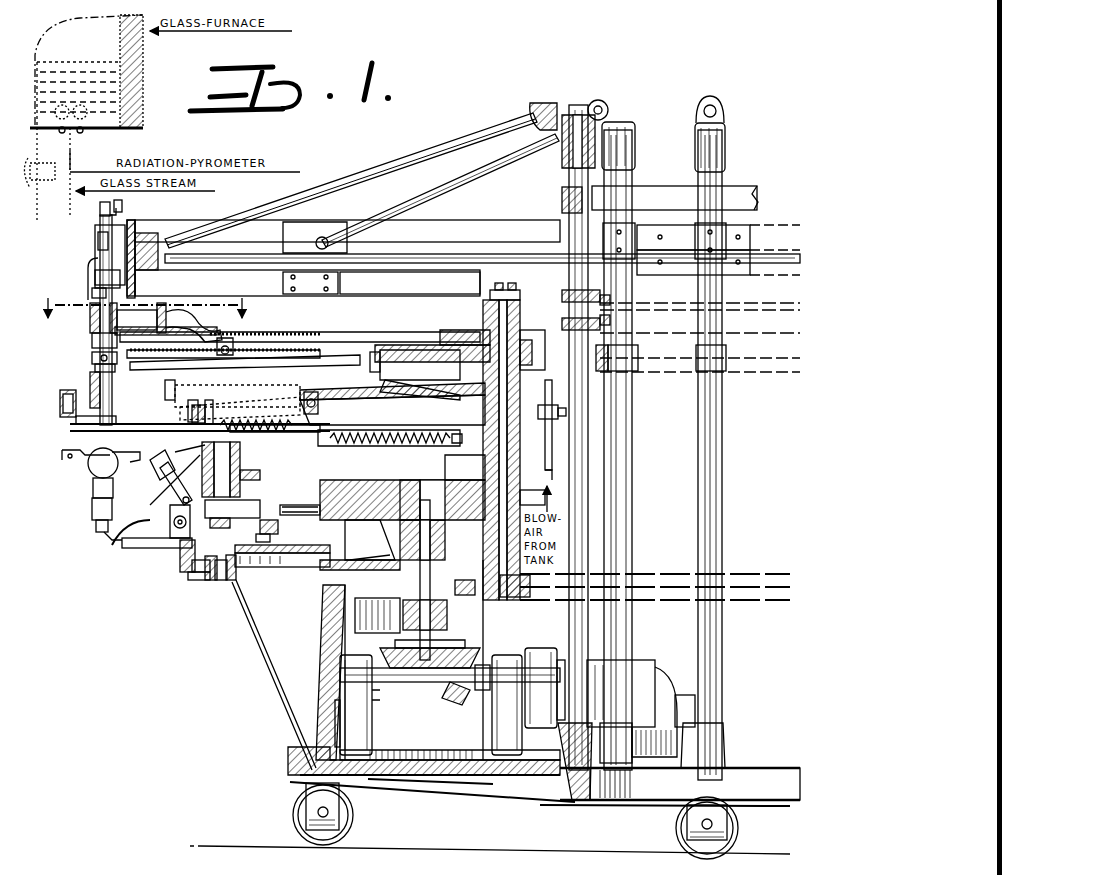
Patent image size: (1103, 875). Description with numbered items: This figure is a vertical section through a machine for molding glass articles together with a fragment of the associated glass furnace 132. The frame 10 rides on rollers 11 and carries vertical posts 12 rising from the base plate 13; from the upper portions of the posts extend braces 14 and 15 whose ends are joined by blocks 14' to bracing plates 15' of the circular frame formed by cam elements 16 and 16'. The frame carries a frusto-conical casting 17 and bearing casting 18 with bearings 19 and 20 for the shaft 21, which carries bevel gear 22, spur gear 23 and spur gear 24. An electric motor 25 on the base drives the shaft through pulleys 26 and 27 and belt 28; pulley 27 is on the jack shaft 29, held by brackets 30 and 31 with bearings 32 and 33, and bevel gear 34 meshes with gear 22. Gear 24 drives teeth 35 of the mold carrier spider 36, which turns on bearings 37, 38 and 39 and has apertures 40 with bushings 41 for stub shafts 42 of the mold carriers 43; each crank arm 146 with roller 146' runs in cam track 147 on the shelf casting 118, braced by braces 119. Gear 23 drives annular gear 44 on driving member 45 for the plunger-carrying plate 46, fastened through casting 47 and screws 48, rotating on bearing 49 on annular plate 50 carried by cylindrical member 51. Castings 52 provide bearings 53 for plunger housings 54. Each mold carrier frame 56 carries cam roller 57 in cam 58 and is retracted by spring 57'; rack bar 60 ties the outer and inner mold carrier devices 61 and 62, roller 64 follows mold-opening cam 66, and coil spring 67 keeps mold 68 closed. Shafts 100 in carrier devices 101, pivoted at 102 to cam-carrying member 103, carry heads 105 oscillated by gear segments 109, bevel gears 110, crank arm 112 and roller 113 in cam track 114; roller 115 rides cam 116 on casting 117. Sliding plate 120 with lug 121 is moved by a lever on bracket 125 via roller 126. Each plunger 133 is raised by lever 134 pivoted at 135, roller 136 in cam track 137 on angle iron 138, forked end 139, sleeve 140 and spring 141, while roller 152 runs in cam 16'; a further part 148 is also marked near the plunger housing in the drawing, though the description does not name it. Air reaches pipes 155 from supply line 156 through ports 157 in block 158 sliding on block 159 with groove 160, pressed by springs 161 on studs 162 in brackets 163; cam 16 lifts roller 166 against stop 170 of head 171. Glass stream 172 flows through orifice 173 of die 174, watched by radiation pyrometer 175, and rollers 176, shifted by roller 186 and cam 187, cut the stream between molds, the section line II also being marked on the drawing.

The frame 10 is at (286, 778).
The rollers 11 is at (352, 818).
The vertical standards or posts 12 is at (705, 520).
The base plate 13 is at (446, 790).
The braces 14 is at (332, 204).
The blocks 14' is at (467, 204).
The braces 15 is at (482, 243).
The bracing plates 15' is at (467, 249).
The cam element 16 is at (446, 214).
The channel-shaped cam member 16' is at (410, 283).
The casting 17 is at (318, 688).
The bearing casting 18 is at (340, 620).
The bearing 19 is at (409, 551).
The bearing 20 is at (400, 606).
The shaft 21 is at (447, 612).
The bevel gear 22 is at (462, 642).
The spur gear 23 is at (380, 560).
The spur gear 24 is at (408, 500).
The electric motor 25 is at (645, 660).
The pulley 26 is at (518, 730).
The pulley 27 is at (550, 650).
The connecting belt 28 is at (535, 648).
The jack shaft 29 is at (415, 684).
The bracket 30 is at (505, 655).
The bracket 31 is at (358, 660).
The bearing 32 is at (486, 692).
The bearing 33 is at (362, 690).
The bevel gear 34 is at (458, 704).
The teeth 35 is at (452, 490).
The mold carrier spider 36 is at (402, 486).
The bearing 37 is at (545, 440).
The bearing 38 is at (528, 494).
The bearing 39 is at (318, 522).
The apertures 40 is at (380, 440).
The bushings or bearing members 41 is at (385, 460).
The stub shafts 42 is at (212, 490).
The mold carriers 43 is at (248, 425).
The annular gear 44 is at (463, 595).
The hollow cylindrical driving member 45 is at (520, 597).
The plunger-carrying plate 46 is at (457, 326).
The connecting and bearing-carrying casting 47 is at (514, 283).
The screws 48 is at (500, 283).
The bearing 49 is at (392, 409).
The annular plate 50 is at (392, 398).
The generally cylindrical member 51 is at (560, 497).
The castings 52 is at (163, 277).
The bearings 53 is at (90, 320).
The plunger housing 54 is at (100, 340).
The mold carrier frame 56 is at (70, 431).
The cam roller 57 is at (389, 429).
The spring 57' is at (396, 428).
The cam 58 is at (312, 395).
The rack bar 60 is at (198, 405).
The outer mold carrier device 61 is at (82, 458).
The inner mold carrier device 62 is at (116, 465).
The roller 64 is at (210, 400).
The mold-opening cam 66 is at (245, 398).
The coil spring 67 is at (262, 425).
The mold 68 is at (92, 470).
The shaft 100 is at (106, 522).
The carrier devices 101 is at (138, 538).
The pivot 102 is at (175, 548).
The cam-carrying member 103 is at (165, 485).
The head 105 is at (93, 498).
The bevel gear segments 109 is at (110, 532).
The bevel gears 110 is at (116, 542).
The crank arm 112 is at (218, 582).
The roller 113 is at (228, 580).
The cam track 114 is at (240, 553).
The roller 115 is at (192, 566).
The cam 116 is at (195, 578).
The casting 117 is at (208, 580).
The shelf casting 118 is at (255, 567).
The braces 119 is at (270, 680).
The horizontally sliding plate 120 is at (156, 465).
The lug 121 is at (190, 450).
The bracket 125 is at (168, 470).
The roller 126 is at (185, 572).
The glass furnace 132 is at (142, 90).
The plunger 133 is at (93, 292).
The lever 134 is at (290, 342).
The pivot 135 is at (224, 338).
The roller 136 is at (390, 345).
The cam track 137 is at (382, 355).
The angle iron 138 is at (420, 375).
The forked end 139 is at (98, 360).
The sleeve 140 is at (95, 368).
The coil spring 141 is at (115, 342).
The crank arm 146 is at (232, 519).
The roller 146' is at (284, 511).
The cam track 147 is at (272, 520).
The block 148 is at (76, 420).
The roller 152 is at (90, 275).
The pipes 155 is at (333, 350).
The air supply line 156 is at (548, 478).
The ports 157 is at (599, 296).
The block 158 is at (500, 300).
The block 159 is at (601, 323).
The registering port or groove 160 is at (500, 325).
The springs 161 is at (587, 351).
The studs 162 is at (531, 360).
The supporting brackets 163 is at (700, 352).
The roller 166 is at (136, 200).
The stop 170 is at (103, 225).
The head 171 is at (100, 262).
The stream 172 is at (92, 157).
The orifice 173 is at (68, 133).
The die 174 is at (84, 130).
The radiation pyrometer 175 is at (68, 185).
The rollers 176 is at (60, 405).
The roller 186 is at (185, 392).
The cam 187 is at (186, 404).
The section line II is at (140, 313).